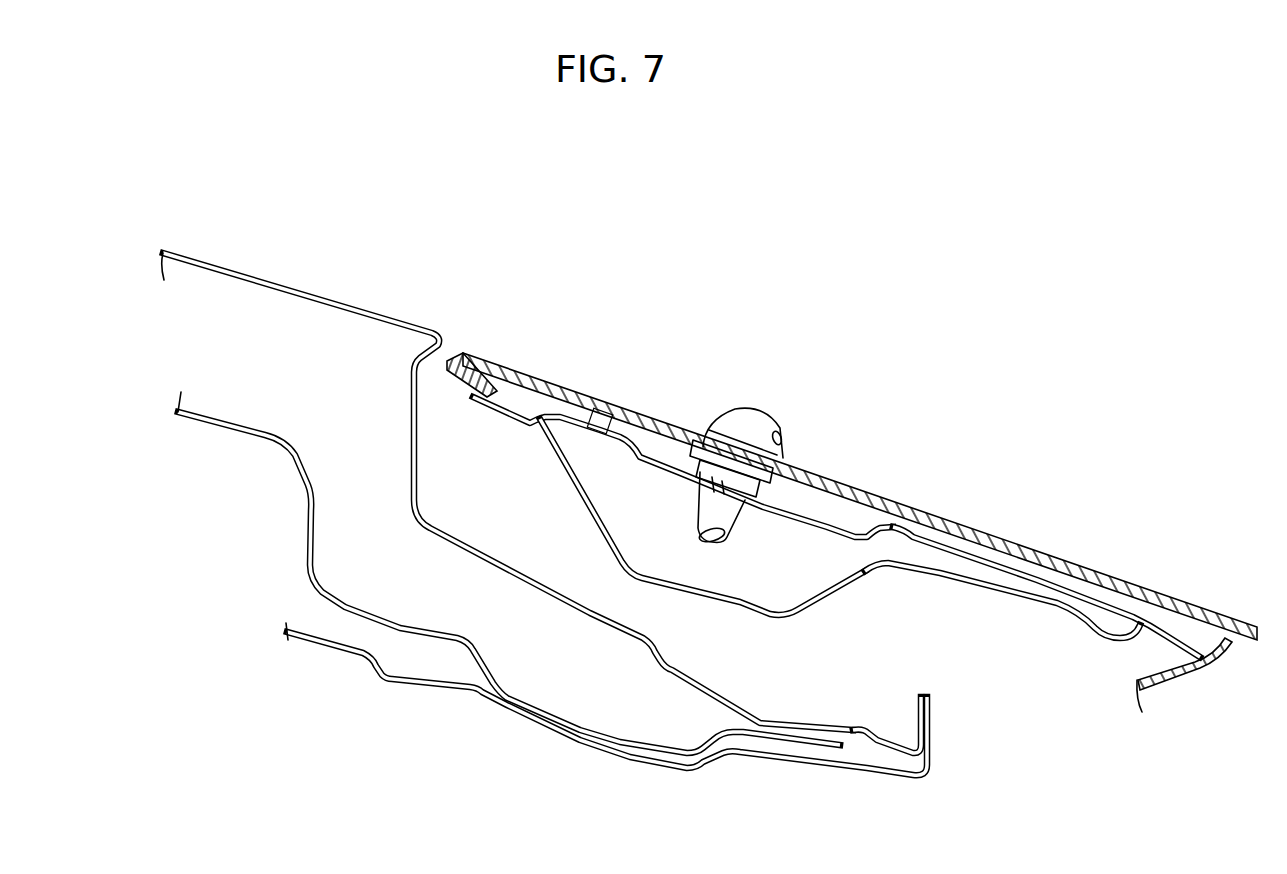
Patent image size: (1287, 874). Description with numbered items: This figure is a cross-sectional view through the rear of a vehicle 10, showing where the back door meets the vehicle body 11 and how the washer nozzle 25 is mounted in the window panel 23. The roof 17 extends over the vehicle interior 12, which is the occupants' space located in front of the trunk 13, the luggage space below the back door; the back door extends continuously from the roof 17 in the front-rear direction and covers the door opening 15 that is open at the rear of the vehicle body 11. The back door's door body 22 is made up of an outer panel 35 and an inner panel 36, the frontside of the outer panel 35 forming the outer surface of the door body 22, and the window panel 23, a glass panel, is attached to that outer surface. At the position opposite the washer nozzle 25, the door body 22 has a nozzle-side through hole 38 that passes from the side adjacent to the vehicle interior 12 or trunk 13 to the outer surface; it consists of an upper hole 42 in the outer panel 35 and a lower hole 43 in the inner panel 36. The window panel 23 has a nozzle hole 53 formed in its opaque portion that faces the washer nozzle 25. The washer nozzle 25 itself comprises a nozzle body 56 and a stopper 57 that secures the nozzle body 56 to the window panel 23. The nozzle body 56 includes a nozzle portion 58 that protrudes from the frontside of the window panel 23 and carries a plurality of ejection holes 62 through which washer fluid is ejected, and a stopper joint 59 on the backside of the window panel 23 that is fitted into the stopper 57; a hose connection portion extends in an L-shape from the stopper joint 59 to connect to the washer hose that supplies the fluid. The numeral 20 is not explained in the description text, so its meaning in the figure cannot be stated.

The vehicle 10 is at (150, 89).
The vehicle body 11 is at (183, 184).
The vehicle interior 12 is at (172, 559).
The trunk 13 is at (1065, 756).
The door opening 15 is at (863, 730).
The roof 17 is at (220, 270).
The fastening assembly 20 is at (662, 390).
The door body 22 is at (1032, 529).
The window panel 23 is at (1043, 550).
The washer nozzle 25 is at (674, 517).
The outer panel 35 is at (910, 537).
The inner panel 36 is at (940, 580).
The nozzle-side through hole 38 is at (691, 501).
The upper hole 42 is at (763, 497).
The lower hole 43 is at (740, 598).
The nozzle hole 53 is at (693, 442).
The nozzle body 56 is at (643, 483).
The stopper 57 is at (717, 485).
The nozzle portion 58 is at (735, 420).
The stopper joint 59 is at (743, 500).
The ejection holes 62 is at (787, 431).